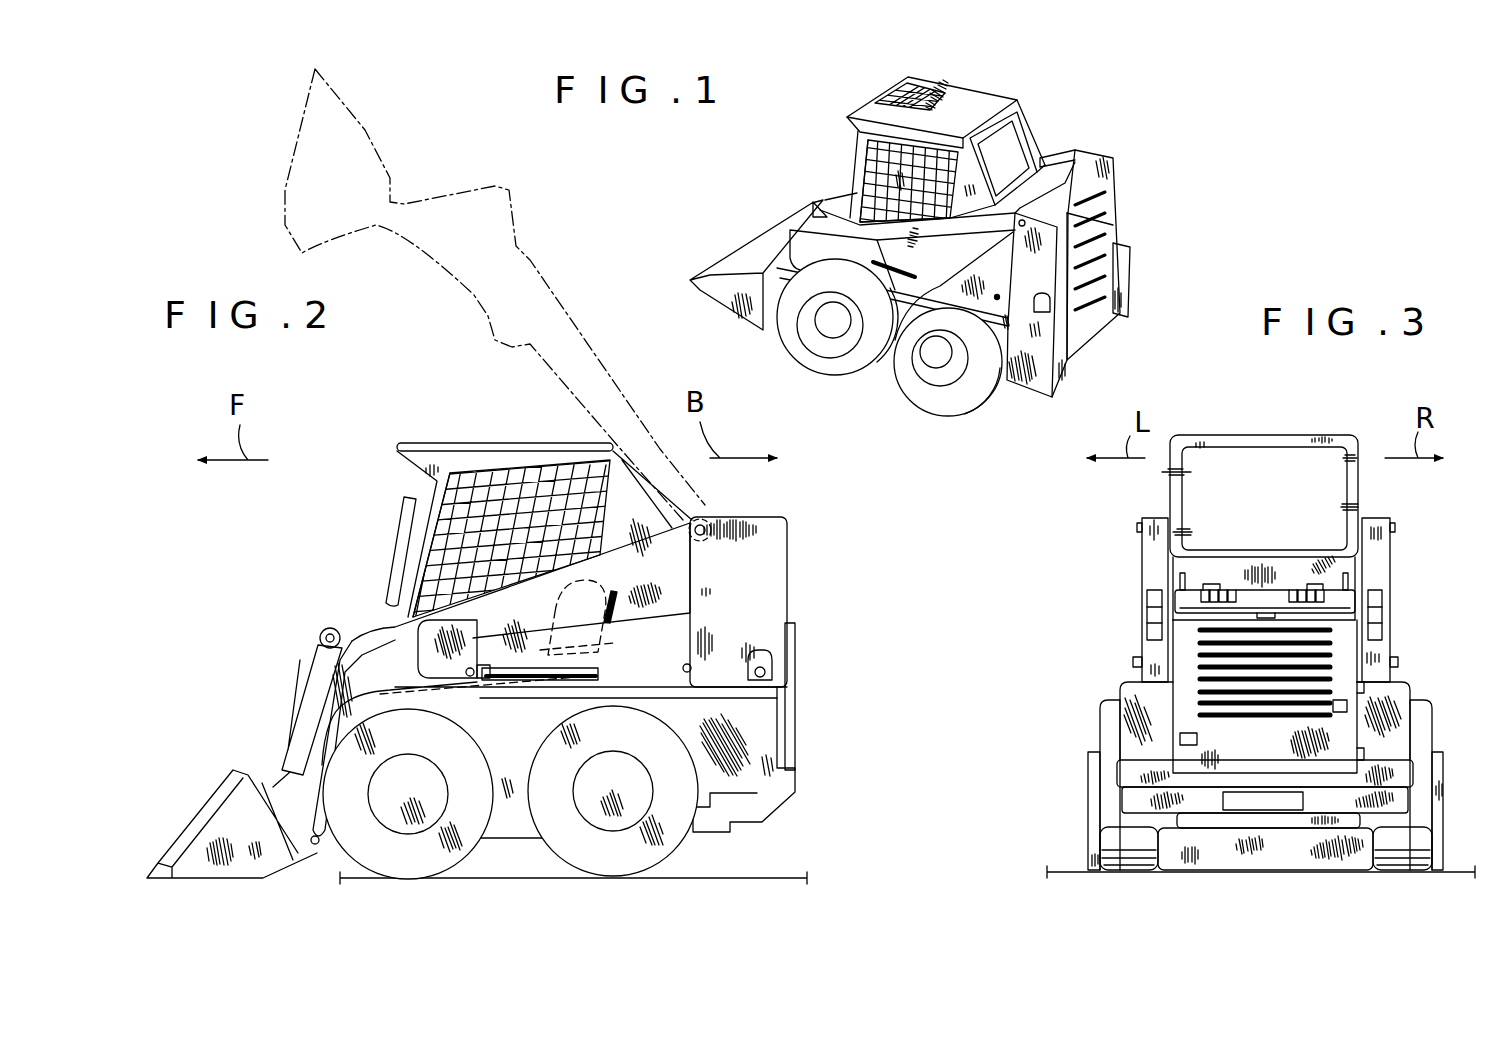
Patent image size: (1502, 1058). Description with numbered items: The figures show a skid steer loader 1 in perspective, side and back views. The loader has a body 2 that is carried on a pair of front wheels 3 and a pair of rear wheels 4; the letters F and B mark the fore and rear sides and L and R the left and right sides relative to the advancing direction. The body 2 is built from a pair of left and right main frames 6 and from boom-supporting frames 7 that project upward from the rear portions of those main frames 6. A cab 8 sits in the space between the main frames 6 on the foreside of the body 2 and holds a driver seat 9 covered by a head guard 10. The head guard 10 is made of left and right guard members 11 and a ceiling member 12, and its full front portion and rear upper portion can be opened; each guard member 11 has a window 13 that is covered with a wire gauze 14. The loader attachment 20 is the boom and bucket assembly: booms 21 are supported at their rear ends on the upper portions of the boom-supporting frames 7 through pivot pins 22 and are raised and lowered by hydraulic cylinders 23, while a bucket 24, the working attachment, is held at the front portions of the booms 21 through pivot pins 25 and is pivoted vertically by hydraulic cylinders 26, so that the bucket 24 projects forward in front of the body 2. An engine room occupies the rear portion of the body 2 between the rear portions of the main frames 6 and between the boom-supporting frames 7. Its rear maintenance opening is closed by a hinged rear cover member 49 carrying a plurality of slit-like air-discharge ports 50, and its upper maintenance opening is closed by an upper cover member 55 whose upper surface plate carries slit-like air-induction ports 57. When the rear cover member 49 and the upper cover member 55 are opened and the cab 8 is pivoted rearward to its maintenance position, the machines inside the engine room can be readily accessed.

In FIG. 1, the skid steer loader 1 is at (743, 218).
In FIG. 2, the skid steer loader 1 is at (277, 570).
In FIG. 1, the body 2 is at (1133, 260).
In FIG. 2, the body 2 is at (797, 779).
In FIG. 1, the front wheels 3 is at (833, 367).
In FIG. 2, the front wheels 3 is at (452, 860).
In FIG. 1, the rear wheels 4 is at (943, 415).
In FIG. 2, the rear wheels 4 is at (657, 857).
In FIG. 3, the rear wheels 4 is at (1105, 840).
In FIG. 1, the main frames 6 is at (900, 297).
In FIG. 2, the main frames 6 is at (515, 820).
In FIG. 3, the main frames 6 is at (1127, 690).
In FIG. 1, the boom-supporting frames 7 is at (1070, 190).
In FIG. 2, the boom-supporting frames 7 is at (780, 577).
In FIG. 3, the boom-supporting frames 7 is at (1147, 550).
In FIG. 1, the cab 8 is at (828, 162).
In FIG. 2, the cab 8 is at (390, 515).
In FIG. 2, the driver seat 9 is at (595, 648).
In FIG. 1, the head guard 10 is at (863, 102).
In FIG. 2, the head guard 10 is at (460, 438).
In FIG. 3, the head guard 10 is at (1242, 435).
In FIG. 1, the guard members 11 is at (863, 152).
In FIG. 2, the guard members 11 is at (437, 450).
In FIG. 3, the guard members 11 is at (1172, 487).
In FIG. 1, the ceiling member 12 is at (942, 93).
In FIG. 3, the ceiling member 12 is at (1290, 437).
In FIG. 2, the window 13 is at (507, 470).
In FIG. 2, the wire gauze 14 is at (545, 465).
In FIG. 1, the loader attachment 20 is at (785, 215).
In FIG. 2, the loader attachment 20 is at (245, 742).
In FIG. 1, the booms 21 is at (1048, 158).
In FIG. 2, the booms 21 is at (682, 568).
In FIG. 2, the pivot pins 22 is at (707, 522).
In FIG. 1, the hydraulic cylinders 23 is at (917, 266).
In FIG. 2, the hydraulic cylinders 23 is at (523, 682).
In FIG. 1, the bucket 24 is at (752, 262).
In FIG. 2, the bucket 24 is at (285, 190).
In FIG. 3, the bucket 24 is at (1092, 768).
In FIG. 2, the pivot pins 25 is at (315, 847).
In FIG. 2, the hydraulic cylinders 26 is at (315, 677).
In FIG. 1, the rear cover member 49 is at (1097, 313).
In FIG. 2, the rear cover member 49 is at (797, 652).
In FIG. 3, the rear cover member 49 is at (1347, 730).
In FIG. 1, the air-discharge ports 50 is at (1080, 308).
In FIG. 3, the air-discharge ports 50 is at (1330, 657).
In FIG. 1, the upper cover member 55 is at (1068, 188).
In FIG. 3, the upper cover member 55 is at (1284, 595).
In FIG. 1, the air-induction ports 57 is at (1075, 152).
In FIG. 3, the air-induction ports 57 is at (1332, 597).